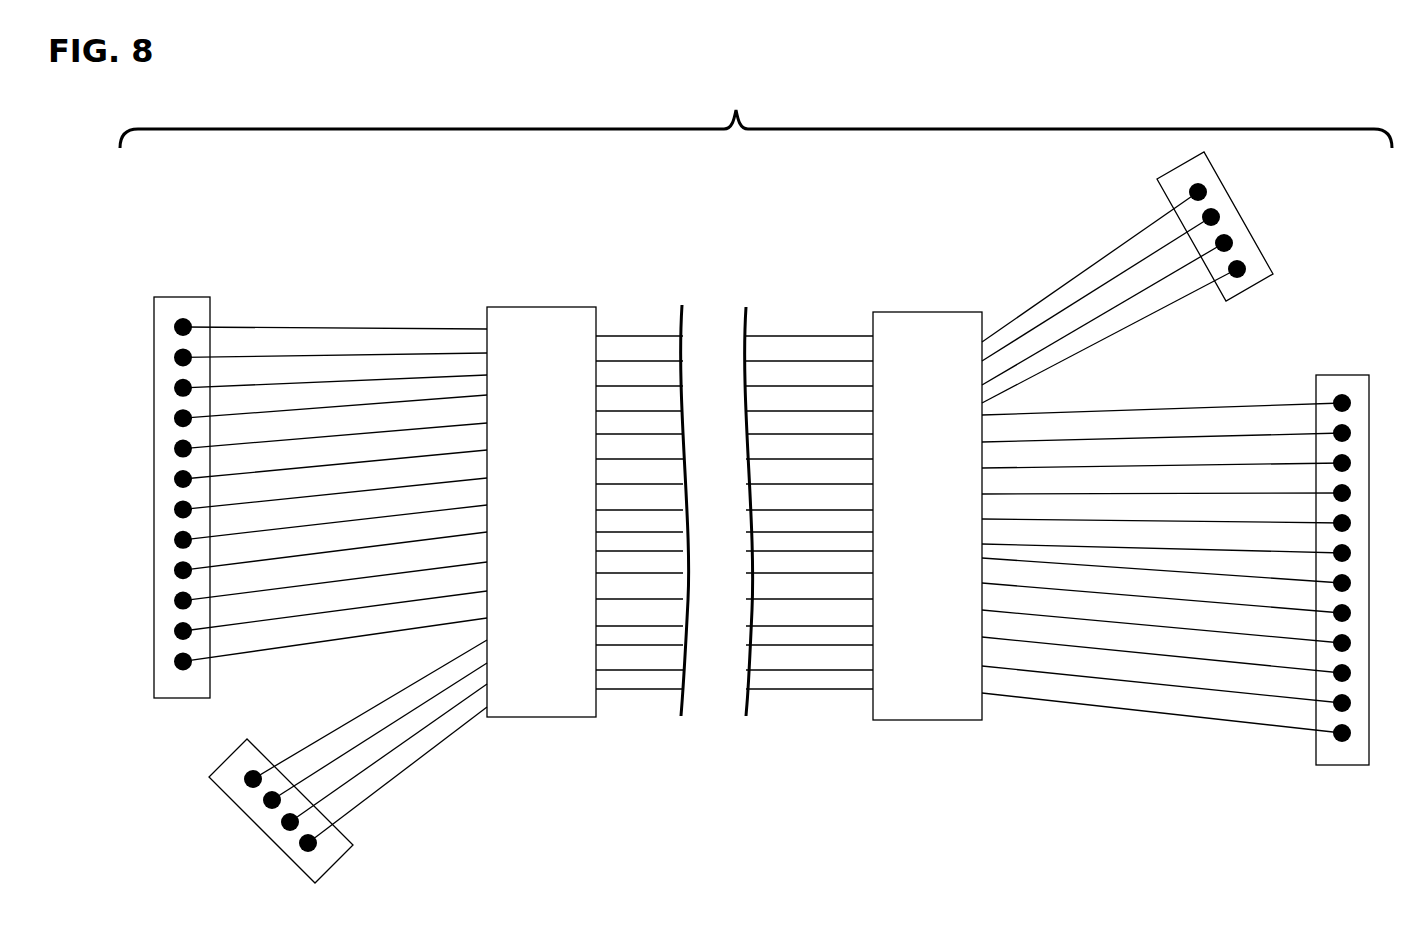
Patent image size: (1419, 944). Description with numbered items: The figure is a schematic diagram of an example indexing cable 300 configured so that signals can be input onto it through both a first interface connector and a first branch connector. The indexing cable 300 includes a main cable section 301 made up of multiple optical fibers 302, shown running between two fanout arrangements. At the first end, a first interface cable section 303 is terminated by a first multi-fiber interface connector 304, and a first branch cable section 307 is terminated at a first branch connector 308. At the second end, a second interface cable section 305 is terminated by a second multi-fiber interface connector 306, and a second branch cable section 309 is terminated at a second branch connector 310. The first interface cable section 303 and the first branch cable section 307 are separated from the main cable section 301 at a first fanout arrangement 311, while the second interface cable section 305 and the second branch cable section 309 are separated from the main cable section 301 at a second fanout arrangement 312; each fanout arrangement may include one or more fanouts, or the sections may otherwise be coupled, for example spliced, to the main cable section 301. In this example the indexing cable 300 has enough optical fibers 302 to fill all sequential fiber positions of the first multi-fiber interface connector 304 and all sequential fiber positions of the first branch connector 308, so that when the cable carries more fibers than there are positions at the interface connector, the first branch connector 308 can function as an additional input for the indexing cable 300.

The indexing cable 300 is at (756, 115).
The main cable section 301 is at (812, 690).
The optical fibers 302 is at (637, 358).
The first interface cable section 303 is at (348, 322).
The first multi-fiber interface connector 304 is at (153, 403).
The second interface cable section 305 is at (1162, 727).
The second multi-fiber interface connector 306 is at (1347, 376).
The first branch cable section 307 is at (405, 779).
The first branch connector 308 is at (260, 832).
The second branch cable section 309 is at (1120, 342).
The second branch connector 310 is at (1252, 228).
The first fanout arrangement 311 is at (510, 519).
The second fanout arrangement 312 is at (897, 519).